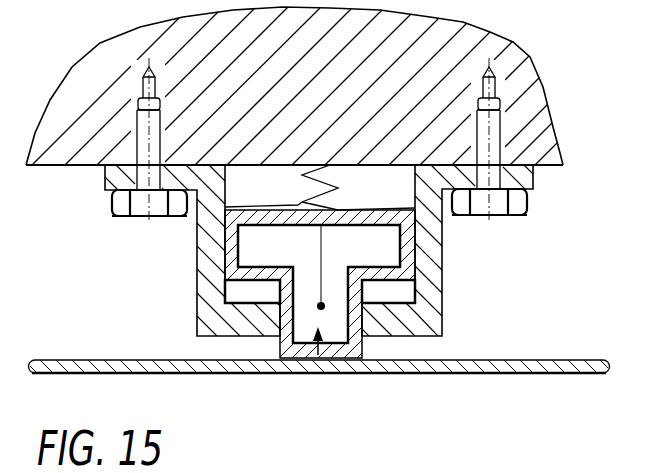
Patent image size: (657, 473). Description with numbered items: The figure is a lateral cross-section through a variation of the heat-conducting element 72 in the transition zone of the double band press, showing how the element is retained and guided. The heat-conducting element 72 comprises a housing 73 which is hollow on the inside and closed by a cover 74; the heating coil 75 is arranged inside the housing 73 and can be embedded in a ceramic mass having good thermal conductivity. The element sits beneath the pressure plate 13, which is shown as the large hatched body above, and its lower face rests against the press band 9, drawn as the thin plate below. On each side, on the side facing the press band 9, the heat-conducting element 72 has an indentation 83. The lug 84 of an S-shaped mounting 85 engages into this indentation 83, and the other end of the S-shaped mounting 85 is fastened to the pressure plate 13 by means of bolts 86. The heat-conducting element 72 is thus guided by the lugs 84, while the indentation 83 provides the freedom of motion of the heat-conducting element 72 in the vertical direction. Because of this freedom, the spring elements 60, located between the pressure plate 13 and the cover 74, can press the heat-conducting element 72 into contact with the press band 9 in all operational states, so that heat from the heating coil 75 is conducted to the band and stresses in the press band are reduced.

The press band 9 is at (123, 370).
The pressure plate 13 is at (525, 102).
The spring elements 60 is at (223, 210).
The heat-conducting element 72 is at (318, 356).
The housing 73 is at (345, 352).
The cover 74 is at (393, 217).
The heating coil 75 is at (322, 307).
The indentation 83 is at (240, 298).
The lug 84 is at (240, 333).
The S-shaped mounting 85 is at (210, 302).
The bolts 86 is at (122, 209).